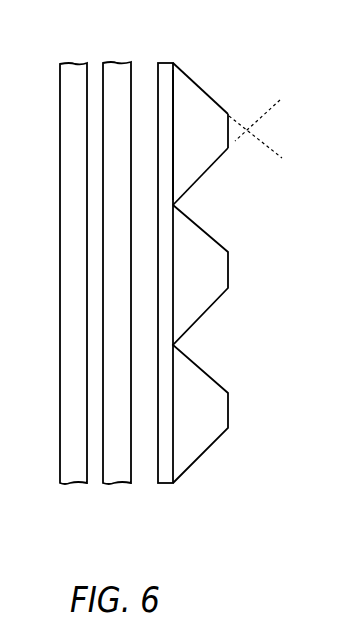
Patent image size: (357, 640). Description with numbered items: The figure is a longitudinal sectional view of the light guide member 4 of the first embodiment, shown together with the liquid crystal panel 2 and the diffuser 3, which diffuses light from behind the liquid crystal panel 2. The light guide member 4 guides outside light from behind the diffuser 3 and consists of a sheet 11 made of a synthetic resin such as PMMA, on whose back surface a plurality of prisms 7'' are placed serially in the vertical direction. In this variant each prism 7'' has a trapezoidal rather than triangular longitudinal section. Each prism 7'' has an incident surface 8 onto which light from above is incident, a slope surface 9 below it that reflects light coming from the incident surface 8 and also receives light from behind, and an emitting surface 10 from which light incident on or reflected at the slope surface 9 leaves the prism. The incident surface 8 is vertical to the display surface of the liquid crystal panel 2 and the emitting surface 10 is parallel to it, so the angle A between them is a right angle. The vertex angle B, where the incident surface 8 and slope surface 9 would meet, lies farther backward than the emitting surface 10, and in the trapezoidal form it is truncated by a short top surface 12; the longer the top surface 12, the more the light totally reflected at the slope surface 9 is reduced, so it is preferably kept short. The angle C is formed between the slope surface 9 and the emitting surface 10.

The liquid crystal panel 2 is at (60, 87).
The diffuser 3 is at (124, 63).
The light guide member 4 is at (278, 60).
The prism 7'' is at (221, 272).
The incident surface 8 is at (199, 89).
The slope surface 9 is at (212, 168).
The emitting surface 10 is at (174, 150).
The sheet 11 is at (165, 63).
The top surface 12 is at (233, 144).
The angle A is at (184, 55).
The vertex angle B is at (255, 129).
The angle C is at (199, 203).